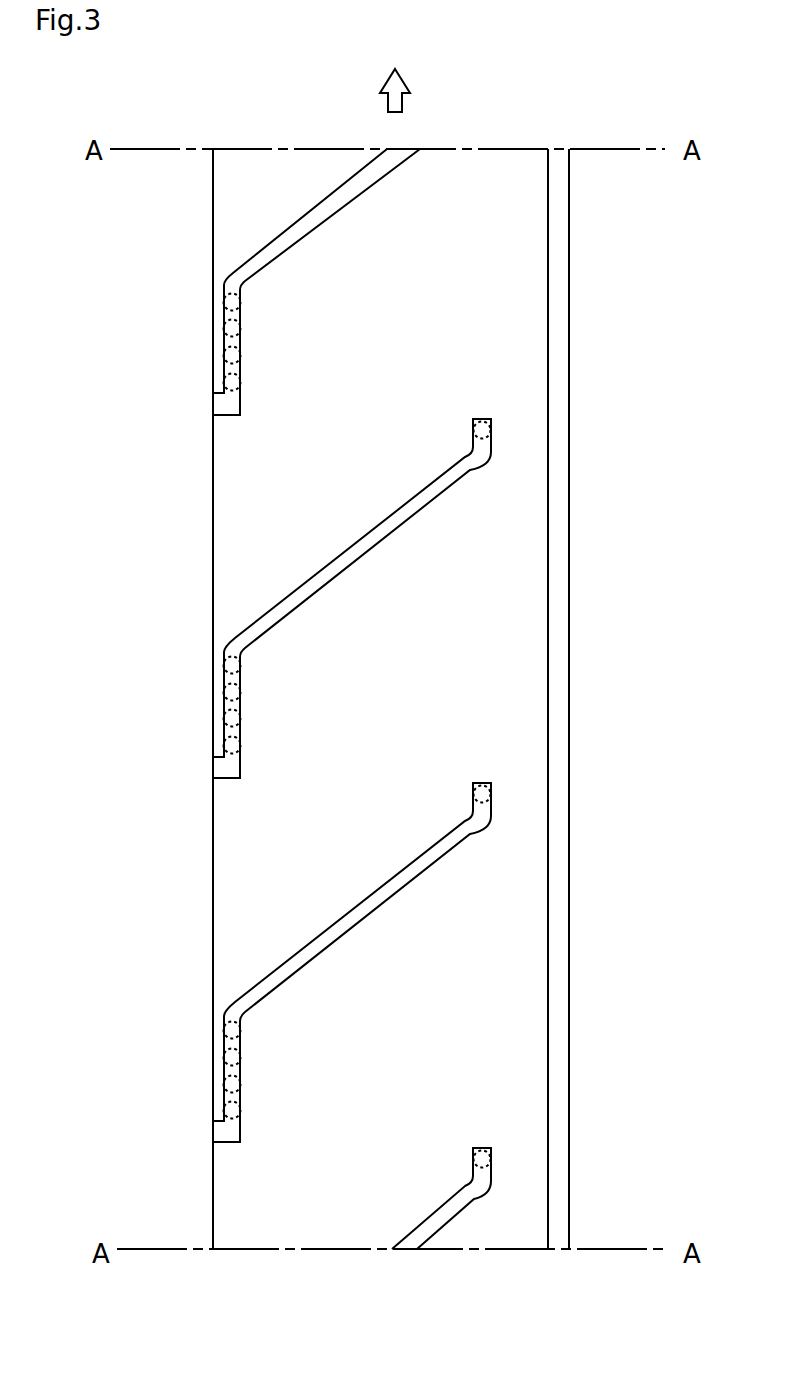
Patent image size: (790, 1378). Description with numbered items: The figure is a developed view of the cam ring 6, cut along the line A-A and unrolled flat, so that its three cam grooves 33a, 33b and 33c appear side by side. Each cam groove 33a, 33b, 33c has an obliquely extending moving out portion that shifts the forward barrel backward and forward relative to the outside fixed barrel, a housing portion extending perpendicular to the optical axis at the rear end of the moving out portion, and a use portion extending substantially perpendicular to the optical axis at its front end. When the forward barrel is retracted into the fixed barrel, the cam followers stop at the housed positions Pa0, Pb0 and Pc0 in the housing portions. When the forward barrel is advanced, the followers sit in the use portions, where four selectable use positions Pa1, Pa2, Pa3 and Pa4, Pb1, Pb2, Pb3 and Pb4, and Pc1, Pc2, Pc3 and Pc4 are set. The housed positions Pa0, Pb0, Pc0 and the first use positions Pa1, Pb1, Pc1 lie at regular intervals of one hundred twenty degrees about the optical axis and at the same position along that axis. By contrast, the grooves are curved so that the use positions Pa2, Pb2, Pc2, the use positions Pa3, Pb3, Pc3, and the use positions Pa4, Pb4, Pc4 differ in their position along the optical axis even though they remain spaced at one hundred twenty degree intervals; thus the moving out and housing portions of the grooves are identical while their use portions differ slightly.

The cam ring 6 is at (212, 532).
The cam groove 33a is at (373, 185).
The cam groove 33b is at (397, 528).
The cam groove 33c is at (397, 893).
The housed position Pa0 is at (483, 1148).
The use position Pa1 is at (240, 302).
The use position Pa2 is at (240, 330).
The use position Pa3 is at (240, 358).
The use position Pa4 is at (240, 387).
The housed position Pb0 is at (483, 419).
The use position Pb1 is at (240, 665).
The use position Pb2 is at (240, 693).
The use position Pb3 is at (240, 720).
The use position Pb4 is at (240, 748).
The housed position Pc0 is at (480, 783).
The use position Pc1 is at (240, 1030).
The use position Pc2 is at (240, 1057).
The use position Pc3 is at (240, 1084).
The use position Pc4 is at (240, 1112).